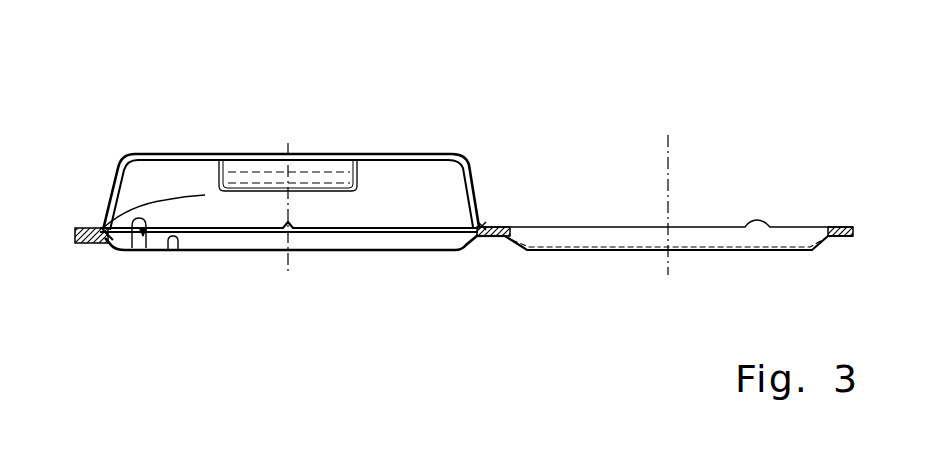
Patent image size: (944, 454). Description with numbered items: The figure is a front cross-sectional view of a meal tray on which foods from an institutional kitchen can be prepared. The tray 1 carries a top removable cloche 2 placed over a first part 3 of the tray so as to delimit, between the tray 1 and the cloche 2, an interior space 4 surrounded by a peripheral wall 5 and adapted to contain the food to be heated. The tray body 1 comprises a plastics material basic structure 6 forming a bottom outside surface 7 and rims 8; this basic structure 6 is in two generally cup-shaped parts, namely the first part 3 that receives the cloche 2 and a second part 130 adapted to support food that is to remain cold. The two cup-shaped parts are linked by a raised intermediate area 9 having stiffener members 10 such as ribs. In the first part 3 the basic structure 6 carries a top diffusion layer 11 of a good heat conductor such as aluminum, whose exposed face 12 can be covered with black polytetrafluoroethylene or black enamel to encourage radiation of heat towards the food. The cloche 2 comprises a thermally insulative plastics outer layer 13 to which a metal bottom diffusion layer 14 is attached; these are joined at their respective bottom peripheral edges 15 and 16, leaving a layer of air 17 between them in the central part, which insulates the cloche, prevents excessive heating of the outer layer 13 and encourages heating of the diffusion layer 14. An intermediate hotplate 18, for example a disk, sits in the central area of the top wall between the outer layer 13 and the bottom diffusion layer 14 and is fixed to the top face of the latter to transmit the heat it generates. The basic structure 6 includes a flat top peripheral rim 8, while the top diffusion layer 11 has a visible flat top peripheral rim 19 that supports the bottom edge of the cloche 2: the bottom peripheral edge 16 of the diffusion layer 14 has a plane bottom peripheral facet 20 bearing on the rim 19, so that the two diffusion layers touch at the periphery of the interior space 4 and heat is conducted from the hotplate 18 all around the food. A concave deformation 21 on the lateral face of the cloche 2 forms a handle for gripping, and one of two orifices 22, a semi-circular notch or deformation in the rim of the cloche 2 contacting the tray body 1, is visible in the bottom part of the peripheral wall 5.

The tray 1 is at (555, 258).
The cloche 2 is at (395, 146).
The first part 3 is at (218, 252).
The interior space 4 is at (157, 177).
The peripheral wall 5 is at (475, 183).
The basic structure 6 is at (262, 252).
The bottom outside surface 7 is at (355, 258).
The rim 8 is at (77, 228).
The raised intermediate area 9 is at (498, 243).
The stiffener member 10 is at (474, 252).
The top diffusion layer 11 is at (165, 252).
The exposed face 12 is at (131, 252).
The outer layer 13 is at (287, 145).
The bottom diffusion layer 14 is at (421, 178).
The bottom peripheral edge of the outer layer 15 is at (98, 227).
The bottom peripheral edge of the bottom diffusion layer 16 is at (203, 195).
The layer of air 17 is at (124, 156).
The intermediate hotplate 18 is at (185, 153).
The top peripheral rim 19 is at (484, 222).
The plane bottom peripheral facet 20 is at (103, 245).
The concave deformation 21 is at (250, 153).
The orifice 22 is at (294, 253).
The second part 130 is at (666, 255).